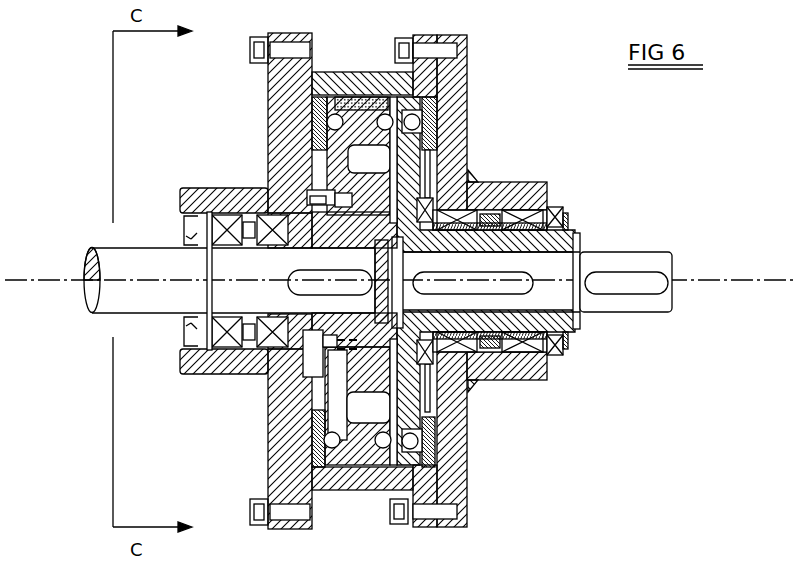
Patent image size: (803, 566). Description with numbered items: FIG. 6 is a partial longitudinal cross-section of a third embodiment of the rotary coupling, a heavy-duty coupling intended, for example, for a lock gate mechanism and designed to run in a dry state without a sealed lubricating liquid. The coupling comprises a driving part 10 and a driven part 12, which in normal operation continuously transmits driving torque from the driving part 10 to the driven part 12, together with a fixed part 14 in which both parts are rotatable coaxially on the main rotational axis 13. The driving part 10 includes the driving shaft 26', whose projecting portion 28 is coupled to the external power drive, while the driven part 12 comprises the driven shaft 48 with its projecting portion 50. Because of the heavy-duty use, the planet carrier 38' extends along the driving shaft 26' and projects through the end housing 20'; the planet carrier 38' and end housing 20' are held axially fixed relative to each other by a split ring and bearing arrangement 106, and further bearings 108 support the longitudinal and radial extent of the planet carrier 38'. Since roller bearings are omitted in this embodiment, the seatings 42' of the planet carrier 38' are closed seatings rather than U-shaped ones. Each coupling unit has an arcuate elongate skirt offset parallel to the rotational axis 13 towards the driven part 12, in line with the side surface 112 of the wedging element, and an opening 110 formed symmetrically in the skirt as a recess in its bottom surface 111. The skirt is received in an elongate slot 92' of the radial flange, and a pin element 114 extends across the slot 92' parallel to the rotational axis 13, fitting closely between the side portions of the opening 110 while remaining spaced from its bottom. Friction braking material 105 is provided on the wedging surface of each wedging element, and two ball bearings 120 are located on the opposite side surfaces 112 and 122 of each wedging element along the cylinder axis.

The driving part 10 is at (618, 234).
The driven part 12 is at (92, 224).
The main rotational axis 13 is at (32, 278).
The fixed part 14 is at (376, 496).
The end housing 20' is at (492, 388).
The driving shaft 26' is at (609, 311).
The projecting portion 28 is at (668, 318).
The planet carrier 38' is at (522, 339).
The seatings 42' is at (277, 267).
The driven shaft 48 is at (161, 301).
The projecting portion 50 is at (93, 305).
The elongate slot 92' is at (264, 177).
The friction braking material 105 is at (347, 97).
The split ring and bearing arrangement 106 is at (552, 362).
The bearings 108 is at (512, 186).
The opening 110 is at (312, 195).
The bottom surface 111 is at (181, 214).
The side surface 112 is at (320, 130).
The pin element 114 is at (190, 189).
The ball bearings 120 is at (405, 462).
The side surface 122 is at (418, 121).